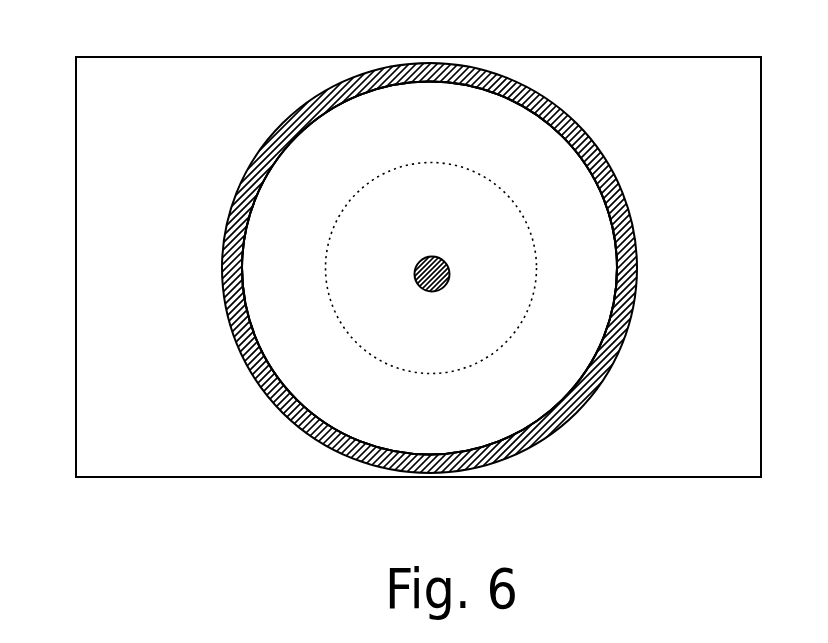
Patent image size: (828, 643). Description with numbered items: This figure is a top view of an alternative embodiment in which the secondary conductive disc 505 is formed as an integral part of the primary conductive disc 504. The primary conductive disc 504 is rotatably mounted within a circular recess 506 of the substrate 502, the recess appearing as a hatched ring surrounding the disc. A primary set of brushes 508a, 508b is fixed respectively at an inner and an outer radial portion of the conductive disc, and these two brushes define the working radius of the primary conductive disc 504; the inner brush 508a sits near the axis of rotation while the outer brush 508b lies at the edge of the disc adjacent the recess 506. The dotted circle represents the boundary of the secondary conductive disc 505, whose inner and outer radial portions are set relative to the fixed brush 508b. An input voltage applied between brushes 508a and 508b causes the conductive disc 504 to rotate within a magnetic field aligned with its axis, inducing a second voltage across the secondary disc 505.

The substrate 502 is at (692, 148).
The primary conductive disc 504 is at (467, 418).
The secondary conductive disc 505 is at (355, 346).
The circular recess 506 is at (636, 252).
The brush 508a is at (420, 260).
The brush 508b is at (613, 248).